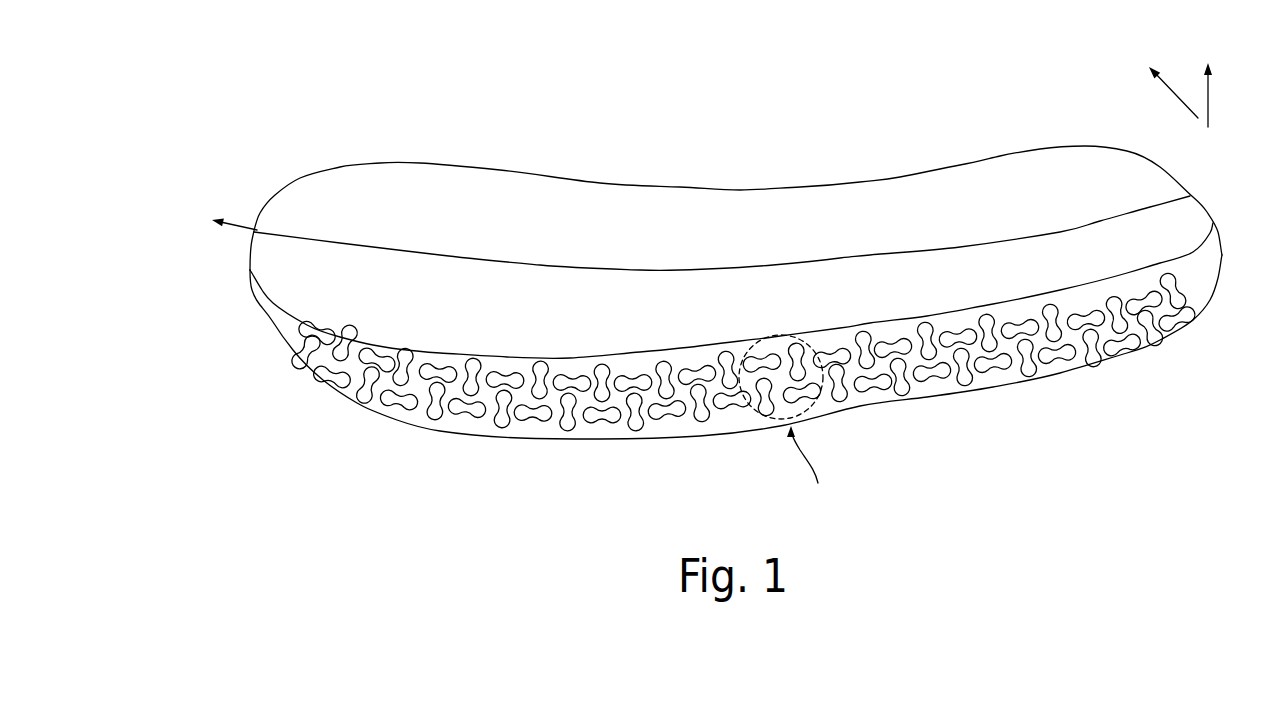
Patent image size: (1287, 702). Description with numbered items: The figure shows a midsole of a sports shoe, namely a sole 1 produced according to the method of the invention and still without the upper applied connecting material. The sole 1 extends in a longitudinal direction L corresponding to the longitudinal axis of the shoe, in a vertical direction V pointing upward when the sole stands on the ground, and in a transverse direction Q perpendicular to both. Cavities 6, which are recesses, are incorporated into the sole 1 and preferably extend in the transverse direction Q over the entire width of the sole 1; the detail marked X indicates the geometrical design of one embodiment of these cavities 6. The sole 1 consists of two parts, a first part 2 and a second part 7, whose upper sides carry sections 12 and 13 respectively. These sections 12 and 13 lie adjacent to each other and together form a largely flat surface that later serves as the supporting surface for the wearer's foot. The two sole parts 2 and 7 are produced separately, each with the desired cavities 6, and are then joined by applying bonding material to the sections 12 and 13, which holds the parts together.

The sole 1 is at (732, 100).
The first part 2 is at (262, 242).
The cavities 6 is at (475, 410).
The second part 7 is at (350, 187).
The section 12 is at (543, 305).
The section 13 is at (661, 214).